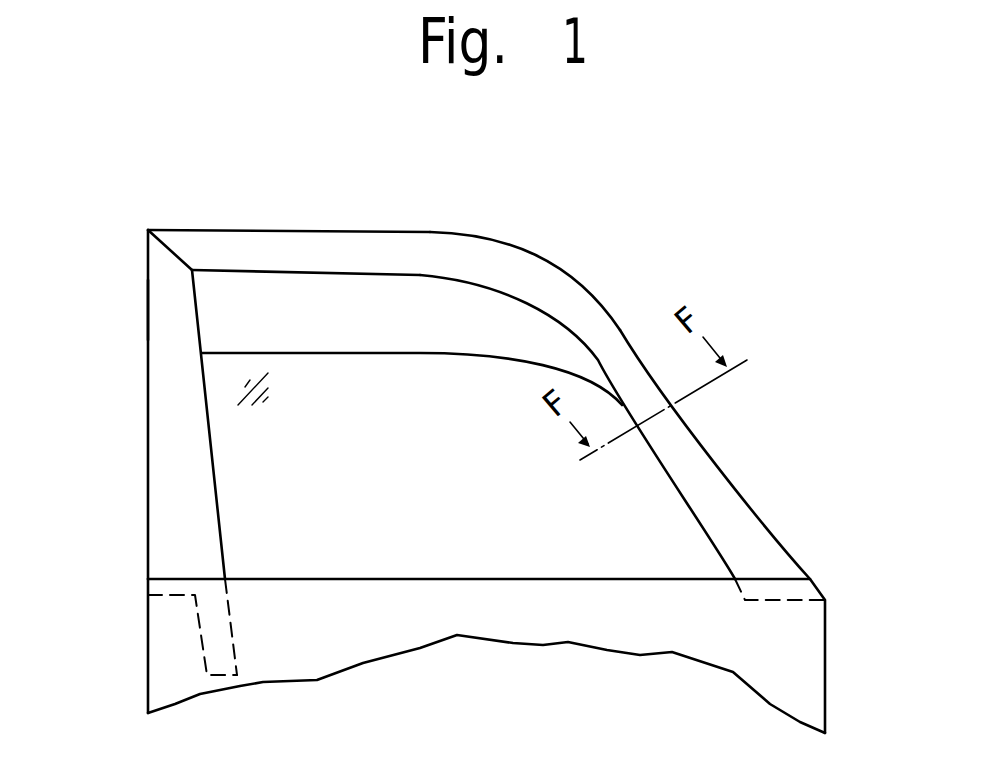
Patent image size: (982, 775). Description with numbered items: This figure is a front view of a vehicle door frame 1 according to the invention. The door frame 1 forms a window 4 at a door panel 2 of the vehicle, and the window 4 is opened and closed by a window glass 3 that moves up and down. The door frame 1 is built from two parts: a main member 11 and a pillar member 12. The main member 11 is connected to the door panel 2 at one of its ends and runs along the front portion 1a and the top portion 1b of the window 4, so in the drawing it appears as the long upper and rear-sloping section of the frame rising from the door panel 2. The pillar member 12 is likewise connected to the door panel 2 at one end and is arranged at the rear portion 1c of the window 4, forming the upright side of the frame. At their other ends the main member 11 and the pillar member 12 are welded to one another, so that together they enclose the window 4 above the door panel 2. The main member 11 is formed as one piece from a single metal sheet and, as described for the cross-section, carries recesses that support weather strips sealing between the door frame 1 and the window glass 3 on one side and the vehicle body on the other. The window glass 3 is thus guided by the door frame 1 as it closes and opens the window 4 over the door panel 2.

The door frame 1 is at (616, 315).
The front portion 1a is at (730, 497).
The top portion 1b is at (365, 240).
The rear portion 1c is at (160, 418).
The door panel 2 is at (817, 650).
The window glass 3 is at (438, 365).
The window 4 is at (272, 283).
The main member 11 is at (537, 255).
The pillar member 12 is at (145, 310).